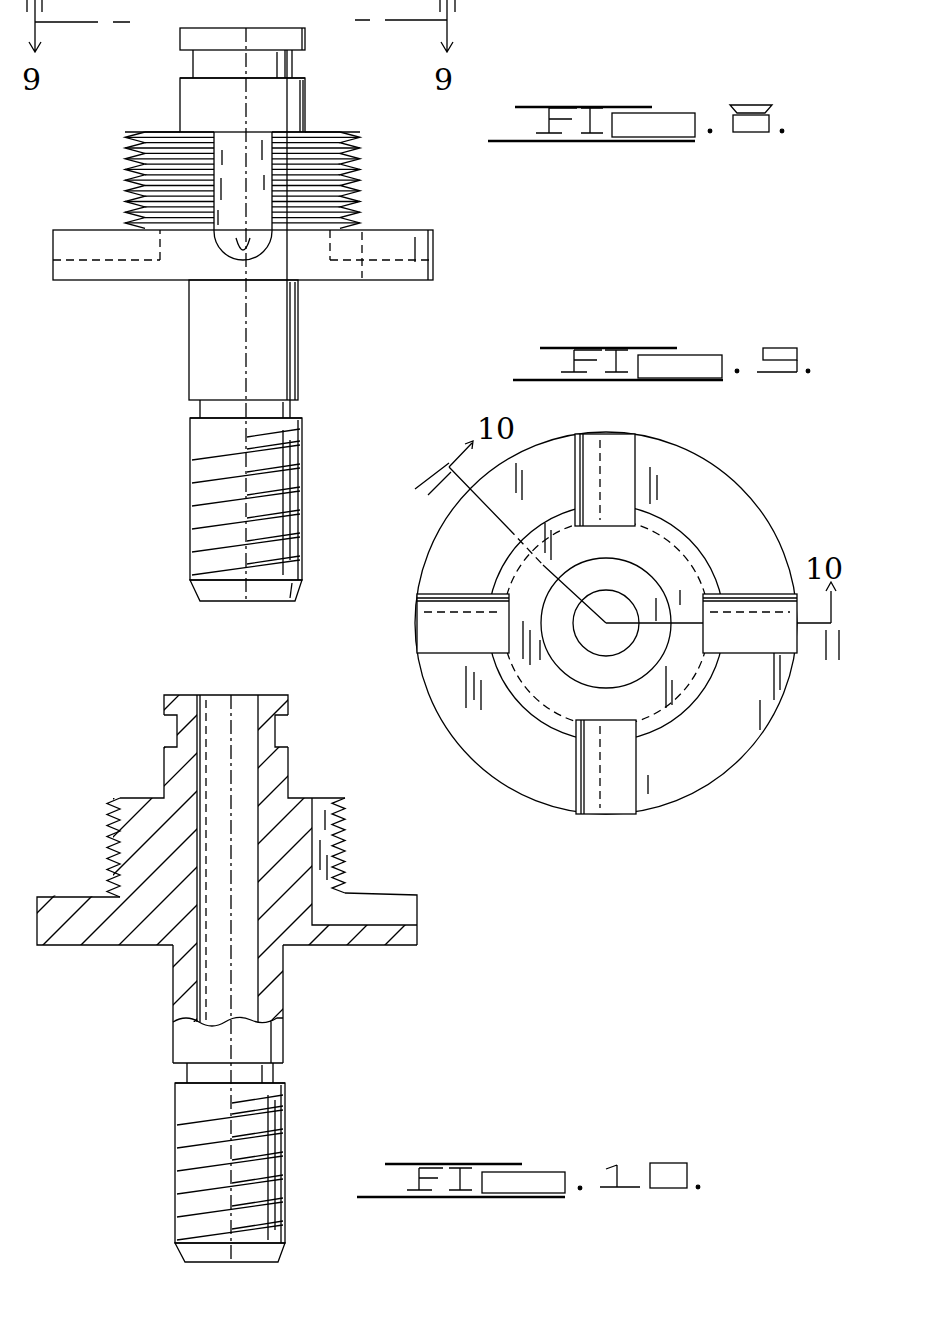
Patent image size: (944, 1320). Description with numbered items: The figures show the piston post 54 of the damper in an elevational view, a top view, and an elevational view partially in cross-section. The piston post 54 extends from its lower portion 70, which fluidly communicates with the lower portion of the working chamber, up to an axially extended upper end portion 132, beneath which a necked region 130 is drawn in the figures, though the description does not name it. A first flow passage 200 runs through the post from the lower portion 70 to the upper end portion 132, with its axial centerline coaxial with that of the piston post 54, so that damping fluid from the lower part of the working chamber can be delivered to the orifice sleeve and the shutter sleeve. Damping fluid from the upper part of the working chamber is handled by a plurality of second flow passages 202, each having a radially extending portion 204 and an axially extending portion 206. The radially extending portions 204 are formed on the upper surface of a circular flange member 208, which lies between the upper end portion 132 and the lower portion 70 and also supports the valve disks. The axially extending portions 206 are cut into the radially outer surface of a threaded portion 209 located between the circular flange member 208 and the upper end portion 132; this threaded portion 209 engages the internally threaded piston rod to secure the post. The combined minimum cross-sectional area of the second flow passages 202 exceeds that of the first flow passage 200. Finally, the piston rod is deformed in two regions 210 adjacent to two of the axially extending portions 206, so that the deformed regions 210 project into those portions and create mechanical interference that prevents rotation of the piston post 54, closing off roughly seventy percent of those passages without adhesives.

In FIG. 8, the piston post 54 is at (174, 377).
In FIG. 9, the piston post 54 is at (746, 753).
In FIG. 10, the piston post 54 is at (303, 1038).
In FIG. 8, the lower portion of the piston post 70 is at (205, 590).
In FIG. 10, the lower portion of the piston post 70 is at (185, 1253).
In FIG. 8, the neck groove 130 is at (193, 63).
In FIG. 10, the neck groove 130 is at (177, 732).
In FIG. 8, the axially extended upper end portion 132 is at (292, 40).
In FIG. 9, the axially extended upper end portion 132 is at (641, 566).
In FIG. 10, the axially extended upper end portion 132 is at (163, 702).
In FIG. 9, the first flow passage 200 is at (626, 612).
In FIG. 10, the first flow passage 200 is at (238, 785).
In FIG. 8, the second flow passages 202 is at (283, 192).
In FIG. 9, the second flow passages 202 is at (637, 463).
In FIG. 10, the second flow passages 202 is at (365, 887).
In FIG. 8, the radially extending portion 204 is at (445, 222).
In FIG. 9, the radially extending portion 204 is at (624, 760).
In FIG. 10, the radially extending portion 204 is at (402, 910).
In FIG. 8, the axially extending portion 206 is at (228, 200).
In FIG. 10, the axially extending portion 206 is at (327, 837).
In FIG. 8, the circular flange member 208 is at (103, 273).
In FIG. 10, the circular flange member 208 is at (70, 933).
In FIG. 8, the threaded portion 209 is at (202, 472).
In FIG. 10, the threaded portion 209 is at (183, 1137).
In FIG. 8, the deformed regions 210 is at (127, 143).
In FIG. 9, the deformed regions 210 is at (528, 708).
In FIG. 10, the deformed regions 210 is at (108, 837).